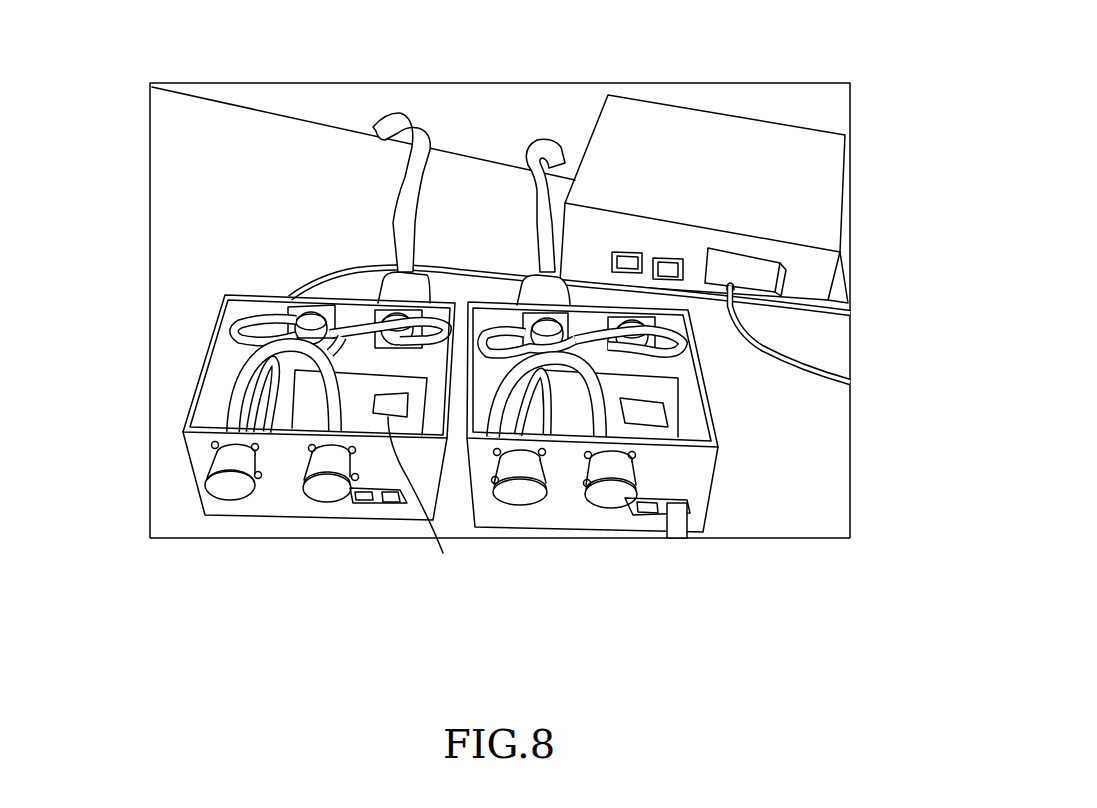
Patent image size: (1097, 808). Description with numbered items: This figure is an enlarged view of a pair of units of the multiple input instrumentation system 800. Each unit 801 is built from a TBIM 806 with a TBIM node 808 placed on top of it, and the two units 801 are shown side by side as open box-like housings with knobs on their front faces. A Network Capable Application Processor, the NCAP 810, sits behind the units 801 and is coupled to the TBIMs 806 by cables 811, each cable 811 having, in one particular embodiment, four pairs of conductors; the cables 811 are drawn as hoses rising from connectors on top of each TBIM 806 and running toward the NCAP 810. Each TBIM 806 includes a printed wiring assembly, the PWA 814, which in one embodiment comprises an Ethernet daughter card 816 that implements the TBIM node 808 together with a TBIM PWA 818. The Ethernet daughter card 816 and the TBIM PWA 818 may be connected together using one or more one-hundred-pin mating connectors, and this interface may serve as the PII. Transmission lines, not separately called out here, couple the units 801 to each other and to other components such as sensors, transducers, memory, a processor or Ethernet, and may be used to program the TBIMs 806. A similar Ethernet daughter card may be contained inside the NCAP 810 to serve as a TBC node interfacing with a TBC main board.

The multiple input instrumentation system 800 is at (805, 68).
The unit 801 is at (312, 545).
The TBIM 806 is at (610, 360).
The TBIM node 808 is at (443, 553).
The Network Capable Application Processor (NCAP) 810 is at (697, 135).
The cable 811 is at (560, 150).
The printed wiring assembly (PWA) 814 is at (208, 321).
The Ethernet daughter card 816 is at (360, 405).
The TBIM PWA 818 is at (337, 437).